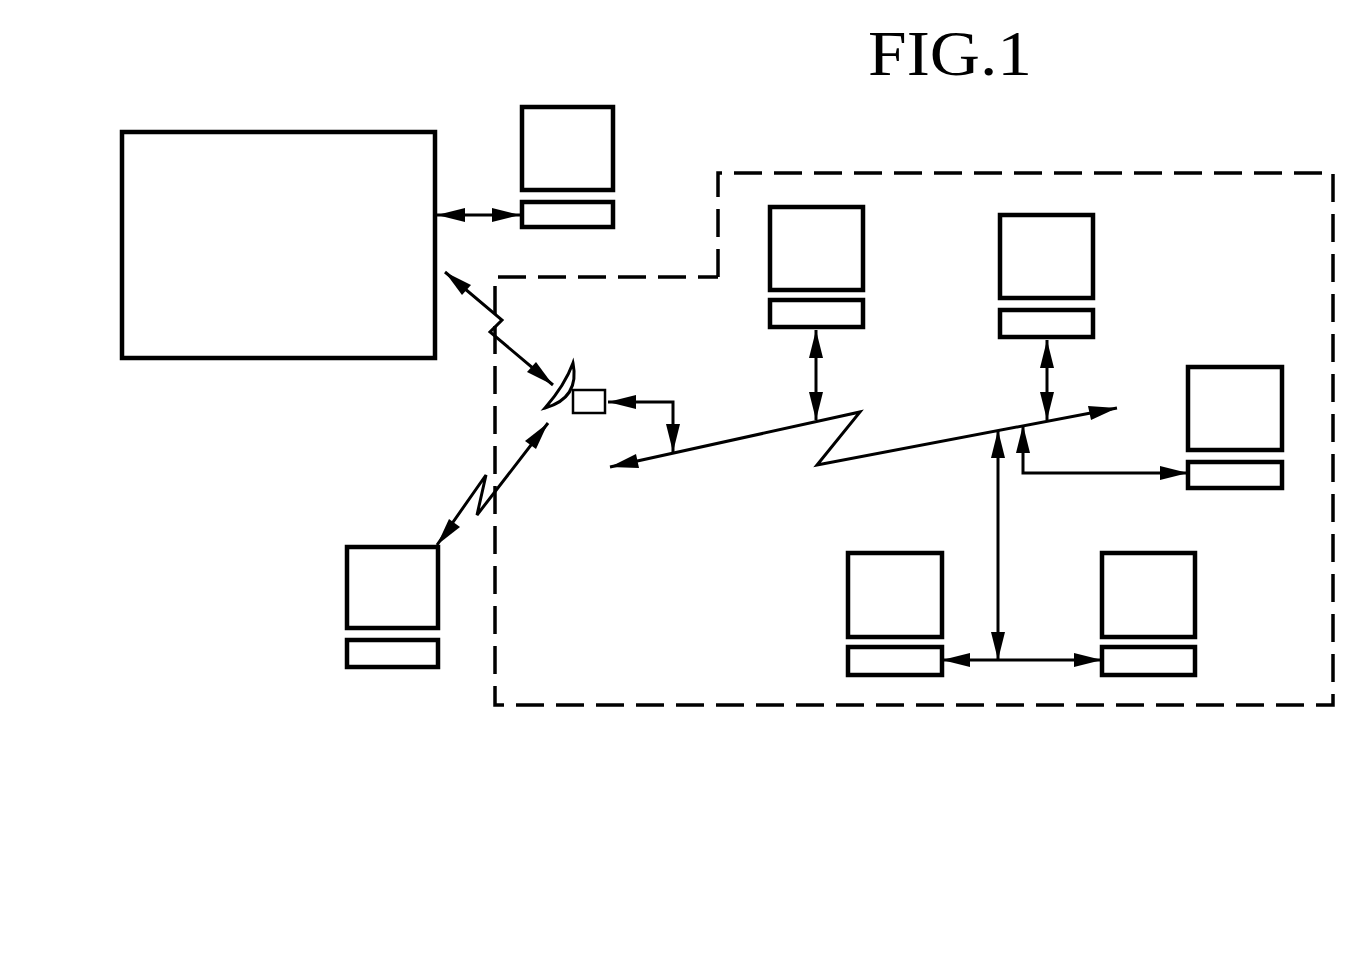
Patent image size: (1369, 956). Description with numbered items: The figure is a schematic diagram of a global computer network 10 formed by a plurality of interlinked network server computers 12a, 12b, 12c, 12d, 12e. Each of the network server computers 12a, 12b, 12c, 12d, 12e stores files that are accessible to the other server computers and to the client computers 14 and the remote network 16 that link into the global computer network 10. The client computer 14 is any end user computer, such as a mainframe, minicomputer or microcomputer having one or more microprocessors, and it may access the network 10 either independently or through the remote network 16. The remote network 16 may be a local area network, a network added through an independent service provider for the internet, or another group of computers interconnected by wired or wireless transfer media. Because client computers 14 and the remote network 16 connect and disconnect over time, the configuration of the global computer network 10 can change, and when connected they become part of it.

The global computer network 10 is at (495, 392).
The network server computer 12a is at (865, 235).
The network server computer 12b is at (1093, 258).
The network server computer 12c is at (1227, 367).
The network server computer 12d is at (1195, 590).
The network server computer 12e is at (848, 598).
The client computer 14 is at (615, 145).
The remote network 16 is at (290, 360).